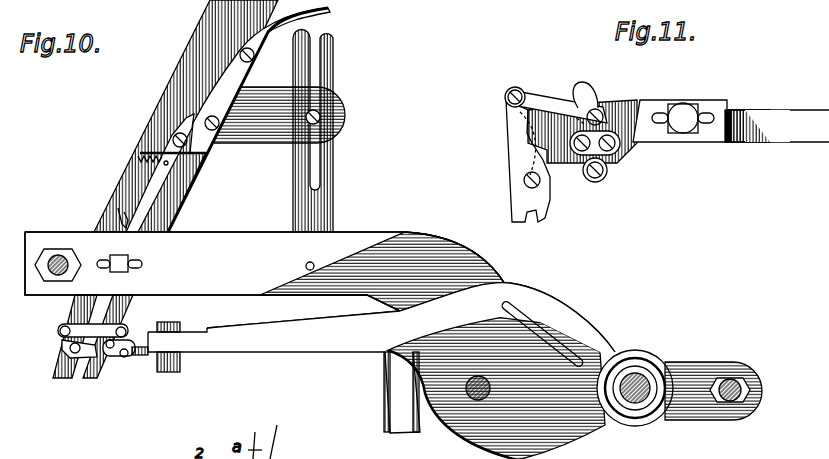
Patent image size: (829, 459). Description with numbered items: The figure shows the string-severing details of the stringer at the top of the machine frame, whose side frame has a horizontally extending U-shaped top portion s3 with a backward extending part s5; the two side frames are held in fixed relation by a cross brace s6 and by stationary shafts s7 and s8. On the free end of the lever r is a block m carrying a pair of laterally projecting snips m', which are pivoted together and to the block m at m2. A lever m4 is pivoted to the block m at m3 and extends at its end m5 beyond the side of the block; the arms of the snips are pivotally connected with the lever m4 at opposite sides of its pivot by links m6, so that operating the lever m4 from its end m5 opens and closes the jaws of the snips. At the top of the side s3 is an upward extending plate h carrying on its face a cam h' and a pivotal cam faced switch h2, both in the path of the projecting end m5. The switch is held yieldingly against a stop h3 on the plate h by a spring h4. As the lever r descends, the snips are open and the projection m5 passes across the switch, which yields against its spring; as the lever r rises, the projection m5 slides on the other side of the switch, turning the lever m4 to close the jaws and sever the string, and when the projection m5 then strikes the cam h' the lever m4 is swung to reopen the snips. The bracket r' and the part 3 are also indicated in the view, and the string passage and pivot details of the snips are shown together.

In FIG. 10, the plate h is at (186, 116).
In FIG. 10, the cam h' is at (245, 120).
In FIG. 10, the pivotal cam faced switch h2 is at (158, 188).
In FIG. 10, the stop h3 is at (118, 212).
In FIG. 10, the spring h4 is at (140, 168).
In FIG. 10, the cross bar 3 is at (208, 156).
In FIG. 10, the U-shaped top portion of side frame s3 is at (247, 243).
In FIG. 10, the backward extending part s5 is at (695, 364).
In FIG. 10, the cross brace s6 is at (748, 384).
In FIG. 10, the stationary shaft s7 is at (648, 400).
In FIG. 10, the stationary shaft s8 is at (492, 395).
In FIG. 10, the lever r is at (266, 349).
In FIG. 11, the lever r is at (777, 140).
In FIG. 10, the bracket r' is at (382, 398).
In FIG. 11, the block m is at (680, 136).
In FIG. 10, the snips m' is at (117, 339).
In FIG. 11, the snips m' is at (525, 161).
In FIG. 10, the pivot m2 is at (62, 352).
In FIG. 11, the pivot m2 is at (524, 182).
In FIG. 10, the pivot m3 is at (135, 342).
In FIG. 11, the pivot m3 is at (612, 150).
In FIG. 10, the lever m4 is at (140, 358).
In FIG. 11, the lever m4 is at (620, 108).
In FIG. 11, the end of lever m5 is at (590, 96).
In FIG. 10, the links m6 is at (80, 326).
In FIG. 11, the links m6 is at (547, 100).